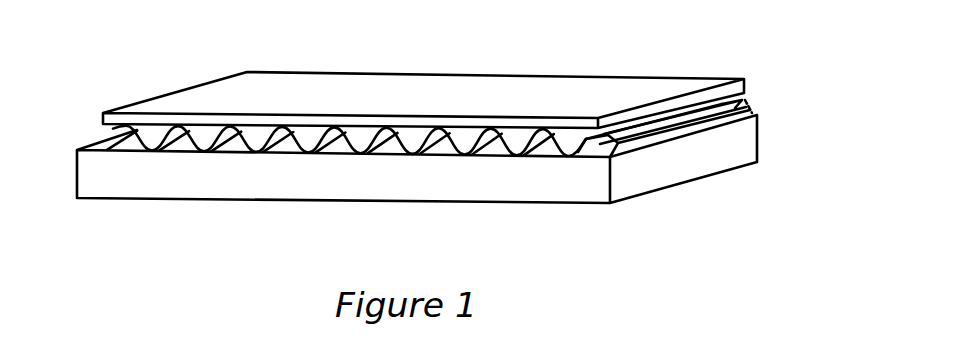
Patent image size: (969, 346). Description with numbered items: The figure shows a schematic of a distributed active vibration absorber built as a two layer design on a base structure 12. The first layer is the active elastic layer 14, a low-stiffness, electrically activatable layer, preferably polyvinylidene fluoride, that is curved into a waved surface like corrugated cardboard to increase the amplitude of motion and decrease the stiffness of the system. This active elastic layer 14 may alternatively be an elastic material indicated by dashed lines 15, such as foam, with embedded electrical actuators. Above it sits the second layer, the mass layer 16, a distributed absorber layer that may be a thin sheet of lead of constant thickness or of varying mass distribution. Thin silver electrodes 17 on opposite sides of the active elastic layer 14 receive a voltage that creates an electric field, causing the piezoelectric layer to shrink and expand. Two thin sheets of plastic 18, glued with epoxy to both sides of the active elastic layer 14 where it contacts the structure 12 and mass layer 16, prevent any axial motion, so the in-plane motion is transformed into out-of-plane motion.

The structure 12 is at (437, 191).
The active elastic layer 14 is at (294, 148).
The elastic material 15 is at (742, 102).
The mass layer 16 is at (513, 122).
The electrodes 17 is at (560, 133).
The sheets of plastic 18 is at (597, 139).